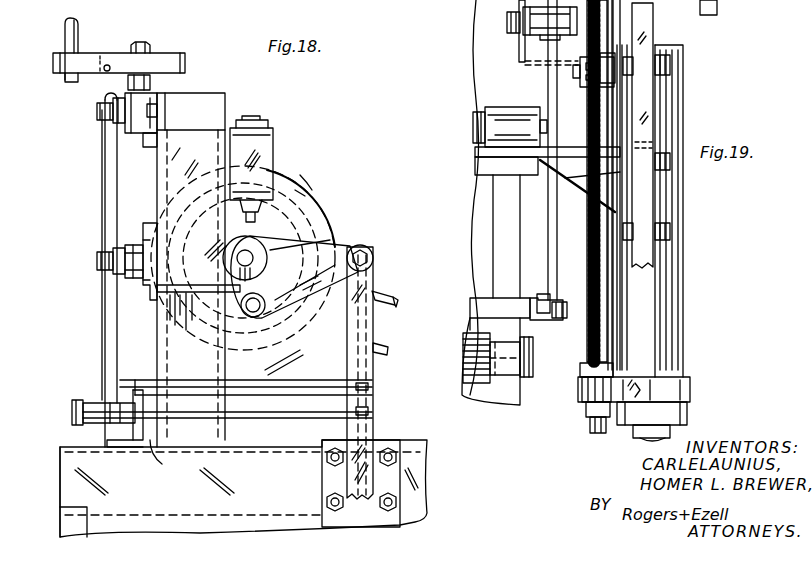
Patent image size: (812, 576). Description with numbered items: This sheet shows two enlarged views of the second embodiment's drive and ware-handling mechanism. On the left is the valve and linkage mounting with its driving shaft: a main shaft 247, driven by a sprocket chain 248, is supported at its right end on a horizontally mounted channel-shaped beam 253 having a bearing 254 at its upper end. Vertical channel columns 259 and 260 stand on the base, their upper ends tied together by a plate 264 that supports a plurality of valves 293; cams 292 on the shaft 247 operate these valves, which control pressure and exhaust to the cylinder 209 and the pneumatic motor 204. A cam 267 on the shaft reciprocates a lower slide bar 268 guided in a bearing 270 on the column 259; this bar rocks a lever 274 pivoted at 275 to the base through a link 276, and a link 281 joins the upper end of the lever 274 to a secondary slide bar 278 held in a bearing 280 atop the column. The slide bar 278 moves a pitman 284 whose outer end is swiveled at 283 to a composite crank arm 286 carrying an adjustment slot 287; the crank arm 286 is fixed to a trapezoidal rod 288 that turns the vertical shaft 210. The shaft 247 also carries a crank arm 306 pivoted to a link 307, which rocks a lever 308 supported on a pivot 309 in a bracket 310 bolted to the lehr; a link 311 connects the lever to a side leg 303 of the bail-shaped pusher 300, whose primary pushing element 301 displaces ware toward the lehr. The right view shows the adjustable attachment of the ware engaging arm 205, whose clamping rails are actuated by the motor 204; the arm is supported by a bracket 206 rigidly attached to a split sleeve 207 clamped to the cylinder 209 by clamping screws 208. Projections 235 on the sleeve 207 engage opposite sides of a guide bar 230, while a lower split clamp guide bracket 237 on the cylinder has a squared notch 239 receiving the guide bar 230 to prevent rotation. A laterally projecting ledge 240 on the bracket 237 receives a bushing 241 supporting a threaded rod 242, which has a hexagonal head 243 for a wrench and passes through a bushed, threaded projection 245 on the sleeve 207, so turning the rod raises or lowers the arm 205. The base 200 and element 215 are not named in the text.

In FIG. 18, the base frame 200 is at (440, 516).
In FIG. 19, the base frame 200 is at (460, 198).
In FIG. 19, the pneumatic motor 204 is at (495, 108).
In FIG. 19, the arm 205 is at (547, 222).
In FIG. 19, the bracket 206 is at (572, 150).
In FIG. 19, the split sleeve 207 is at (670, 90).
In FIG. 19, the clamping screws 208 is at (672, 63).
In FIG. 19, the cylinder 209 is at (656, 305).
In FIG. 19, the vertical shaft 210 is at (634, 441).
In FIG. 19, the cylinder 215 is at (688, 406).
In FIG. 19, the guide bar 230 is at (648, 110).
In FIG. 19, the projections 235 is at (633, 63).
In FIG. 19, the lower split clamp guide bracket 237 is at (690, 387).
In FIG. 19, the squared notch 239 is at (655, 377).
In FIG. 19, the laterally projecting ledge 240 is at (580, 398).
In FIG. 19, the bushing 241 is at (578, 372).
In FIG. 19, the threaded rod 242 is at (600, 334).
In FIG. 19, the hexagonal head 243 is at (590, 432).
In FIG. 19, the threaded projection 245 is at (578, 72).
In FIG. 18, the main shaft 247 is at (229, 248).
In FIG. 18, the sprocket chain 248 is at (383, 292).
In FIG. 18, the channel-shaped beam 253 is at (325, 364).
In FIG. 18, the bearing 254 is at (212, 283).
In FIG. 18, the column 259 is at (206, 94).
In FIG. 18, the column 260 is at (219, 126).
In FIG. 18, the plate 264 is at (233, 160).
In FIG. 18, the cam 267 is at (290, 179).
In FIG. 18, the lower slide bar 268 is at (138, 278).
In FIG. 18, the bearing 270 is at (152, 300).
In FIG. 18, the lever 274 is at (105, 205).
In FIG. 18, the pivot 275 is at (72, 412).
In FIG. 18, the link 276 is at (117, 238).
In FIG. 18, the secondary slide bar 278 is at (140, 120).
In FIG. 18, the bearing 280 is at (153, 150).
In FIG. 18, the link 281 is at (120, 125).
In FIG. 18, the swivel 283 is at (147, 43).
In FIG. 18, the pitman 284 is at (151, 83).
In FIG. 18, the crank arm 286 is at (200, 54).
In FIG. 18, the slot 287 is at (106, 75).
In FIG. 18, the trapezoidal rod 288 is at (64, 30).
In FIG. 18, the cams 292 is at (234, 280).
In FIG. 18, the valves 293 is at (302, 190).
In FIG. 19, the pusher device 300 is at (459, 315).
In FIG. 19, the primary pushing element 301 is at (490, 306).
In FIG. 19, the side leg 303 is at (523, 318).
In FIG. 18, the crank arm 306 is at (318, 262).
In FIG. 18, the link 307 is at (347, 252).
In FIG. 18, the lever 308 is at (353, 326).
In FIG. 19, the lever 308 is at (520, 64).
In FIG. 19, the pivot 309 is at (508, 21).
In FIG. 18, the bracket 310 is at (392, 470).
In FIG. 19, the bracket 310 is at (519, 43).
In FIG. 19, the link 311 is at (545, 296).